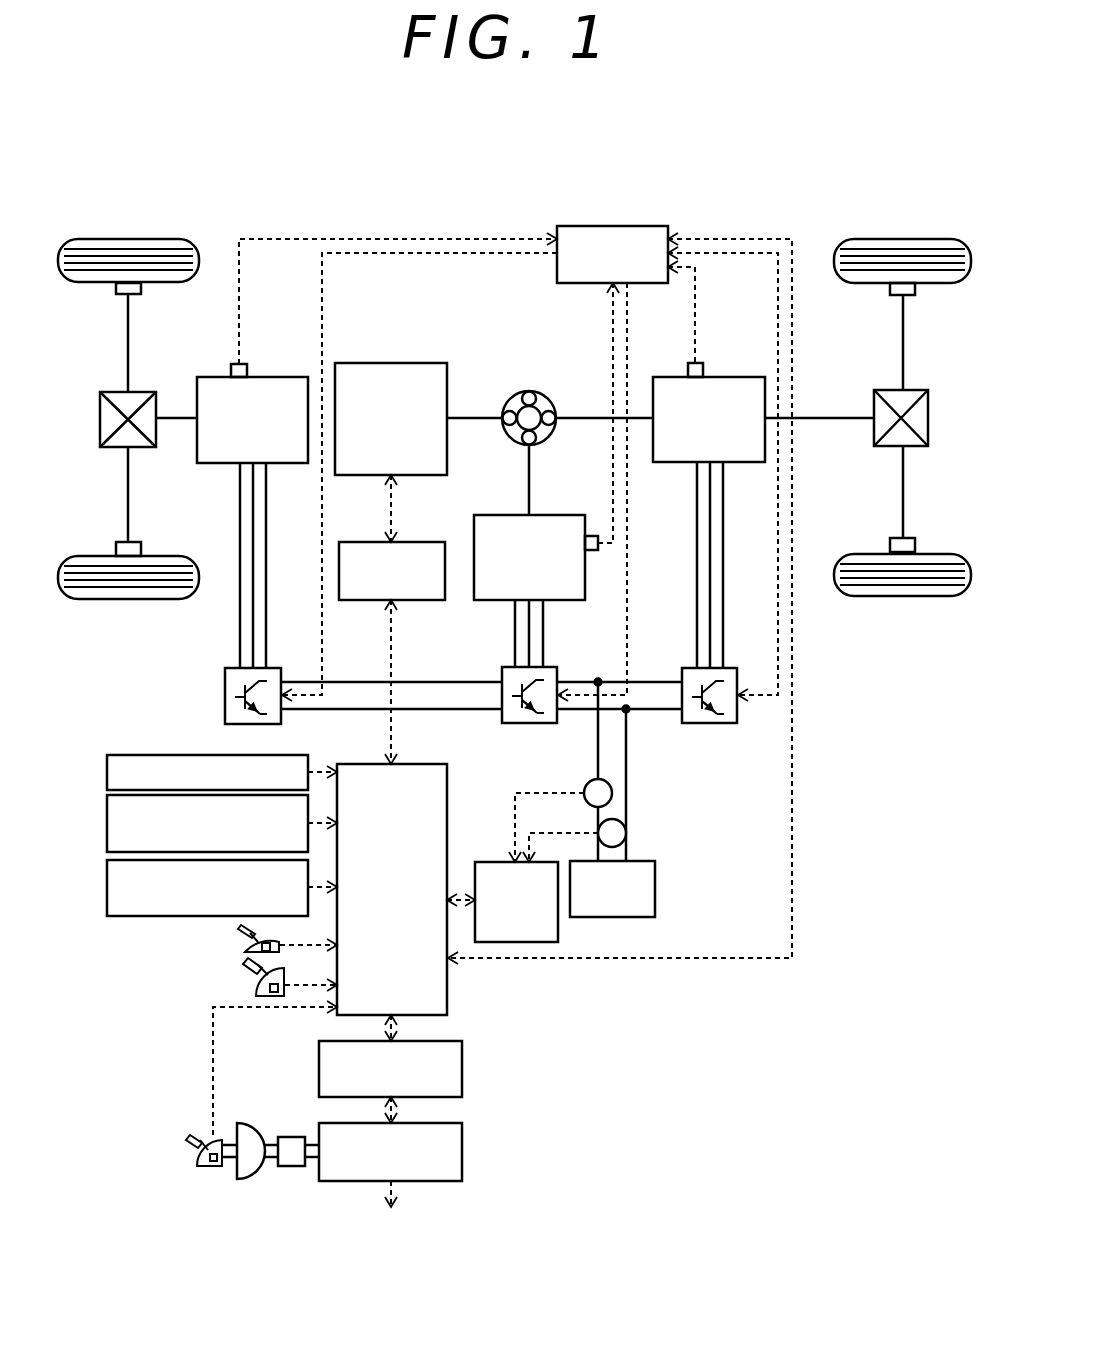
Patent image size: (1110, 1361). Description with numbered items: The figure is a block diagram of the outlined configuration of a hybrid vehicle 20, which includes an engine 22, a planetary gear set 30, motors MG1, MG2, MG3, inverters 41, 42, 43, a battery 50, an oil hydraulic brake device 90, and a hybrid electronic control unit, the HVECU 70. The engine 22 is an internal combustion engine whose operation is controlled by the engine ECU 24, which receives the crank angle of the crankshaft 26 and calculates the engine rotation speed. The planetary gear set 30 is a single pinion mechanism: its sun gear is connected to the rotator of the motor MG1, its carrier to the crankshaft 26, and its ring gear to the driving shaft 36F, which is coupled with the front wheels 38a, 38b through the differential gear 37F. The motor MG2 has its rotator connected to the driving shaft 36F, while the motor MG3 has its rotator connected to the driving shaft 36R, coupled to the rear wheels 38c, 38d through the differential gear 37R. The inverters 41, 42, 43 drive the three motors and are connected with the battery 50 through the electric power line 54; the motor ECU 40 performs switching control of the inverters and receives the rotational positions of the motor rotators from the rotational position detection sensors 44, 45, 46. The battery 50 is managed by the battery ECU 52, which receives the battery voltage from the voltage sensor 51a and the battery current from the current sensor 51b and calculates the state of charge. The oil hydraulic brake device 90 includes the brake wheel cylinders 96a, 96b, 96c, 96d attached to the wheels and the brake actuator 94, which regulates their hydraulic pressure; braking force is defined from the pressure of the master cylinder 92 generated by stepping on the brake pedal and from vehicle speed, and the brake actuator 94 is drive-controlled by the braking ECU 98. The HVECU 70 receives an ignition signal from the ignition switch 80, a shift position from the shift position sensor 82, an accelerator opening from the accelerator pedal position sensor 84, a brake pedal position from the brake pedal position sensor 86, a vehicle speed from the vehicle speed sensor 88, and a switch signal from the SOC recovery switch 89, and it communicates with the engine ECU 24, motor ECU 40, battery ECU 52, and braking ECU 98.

The hybrid vehicle 20 is at (750, 195).
The engine 22 is at (420, 362).
The engine ECU 24 is at (417, 540).
The crankshaft 26 is at (473, 417).
The planetary gear set 30 is at (527, 392).
The driving shaft 36F is at (848, 416).
The driving shaft 36R is at (178, 418).
The differential gear 37F is at (920, 389).
The differential gear 37R is at (108, 390).
The front wheel 38a is at (903, 238).
The front wheel 38b is at (900, 598).
The rear wheel 38c is at (128, 237).
The rear wheel 38d is at (128, 600).
The motor ECU 40 is at (627, 225).
The inverter 41 is at (553, 666).
The inverter 42 is at (735, 667).
The inverter 43 is at (275, 667).
The rotational position detection sensor 44 is at (592, 534).
The rotational position detection sensor 45 is at (688, 362).
The rotational position detection sensor 46 is at (233, 364).
The motor MG1 is at (503, 514).
The motor MG2 is at (722, 377).
The motor MG3 is at (280, 377).
The battery 50 is at (655, 890).
The voltage sensor 51a is at (626, 834).
The current sensor 51b is at (612, 793).
The battery ECU 52 is at (503, 860).
The electric power line 54 is at (598, 737).
The HVECU 70 is at (417, 763).
The ignition switch 80 is at (106, 773).
The shift position sensor 82 is at (238, 942).
The accelerator pedal position sensor 84 is at (240, 985).
The brake pedal position sensor 86 is at (195, 1148).
The vehicle speed sensor 88 is at (106, 823).
The SOC recovery switch 89 is at (106, 887).
The oil hydraulic brake device 90 is at (575, 1045).
The master cylinder 92 is at (292, 1136).
The brake actuator 94 is at (463, 1152).
The brake wheel cylinder 96a is at (888, 288).
The brake wheel cylinder 96b is at (888, 546).
The brake wheel cylinder 96c is at (142, 287).
The brake wheel cylinder 96d is at (142, 548).
The braking ECU 98 is at (463, 1068).